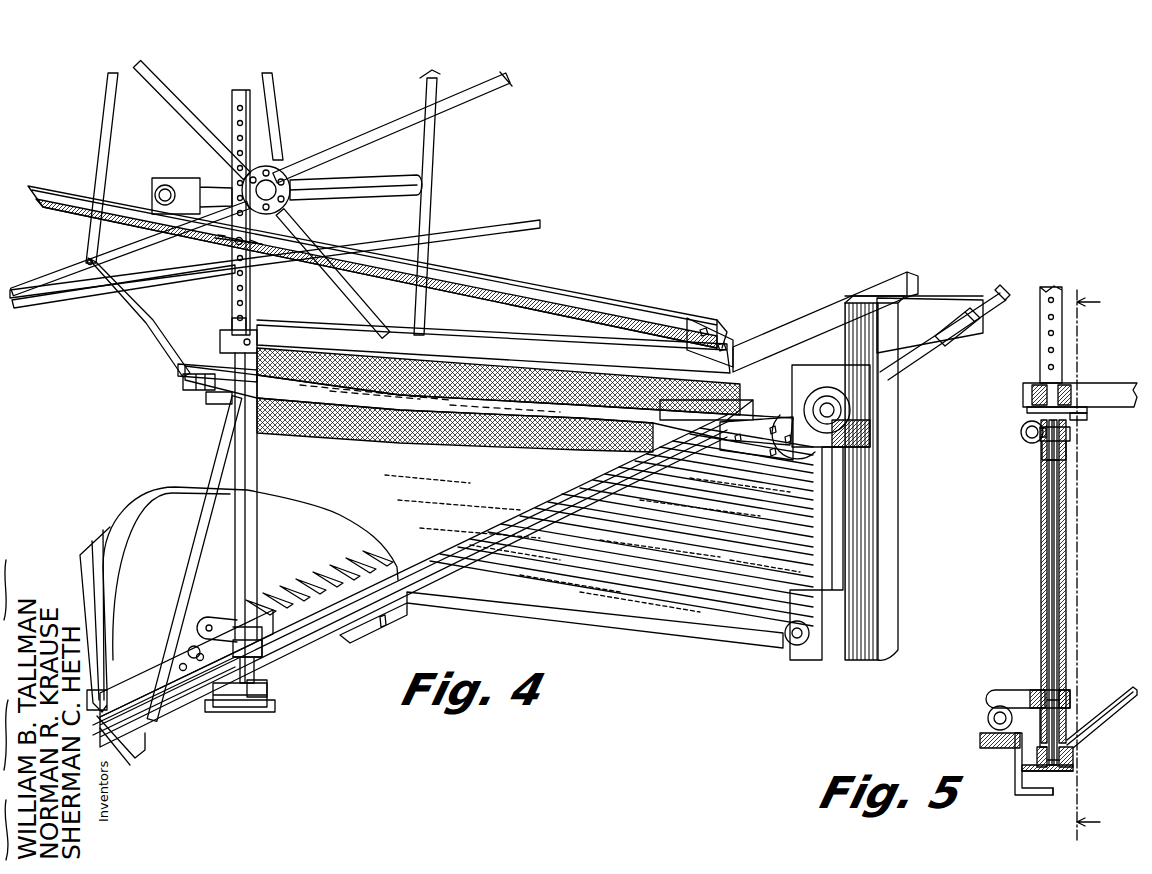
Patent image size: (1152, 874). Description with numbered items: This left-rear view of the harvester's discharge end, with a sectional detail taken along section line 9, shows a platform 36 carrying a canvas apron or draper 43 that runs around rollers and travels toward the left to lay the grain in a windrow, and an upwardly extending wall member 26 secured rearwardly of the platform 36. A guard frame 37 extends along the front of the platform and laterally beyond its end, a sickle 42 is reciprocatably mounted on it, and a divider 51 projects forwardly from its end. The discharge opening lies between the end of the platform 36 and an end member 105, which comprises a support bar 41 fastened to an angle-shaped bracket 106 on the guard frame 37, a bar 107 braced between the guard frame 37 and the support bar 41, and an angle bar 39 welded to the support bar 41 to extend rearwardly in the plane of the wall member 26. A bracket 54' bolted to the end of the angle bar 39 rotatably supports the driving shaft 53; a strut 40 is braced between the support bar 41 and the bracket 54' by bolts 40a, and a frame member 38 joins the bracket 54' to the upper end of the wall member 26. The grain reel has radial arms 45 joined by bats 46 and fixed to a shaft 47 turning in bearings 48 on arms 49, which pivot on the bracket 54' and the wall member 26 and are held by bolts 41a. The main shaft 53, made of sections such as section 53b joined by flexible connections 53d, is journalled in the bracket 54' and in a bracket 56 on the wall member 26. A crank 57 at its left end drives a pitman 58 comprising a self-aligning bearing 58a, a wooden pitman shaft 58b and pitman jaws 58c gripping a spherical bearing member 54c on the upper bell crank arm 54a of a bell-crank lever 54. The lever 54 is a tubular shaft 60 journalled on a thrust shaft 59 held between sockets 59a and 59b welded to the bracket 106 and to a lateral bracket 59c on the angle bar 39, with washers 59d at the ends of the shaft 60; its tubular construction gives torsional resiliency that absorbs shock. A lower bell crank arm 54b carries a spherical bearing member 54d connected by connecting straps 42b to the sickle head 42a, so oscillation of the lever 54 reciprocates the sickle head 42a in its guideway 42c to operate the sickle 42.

In FIG. 5, the section line 9 is at (1094, 567).
In FIG. 4, the wall member 26 is at (893, 520).
In FIG. 4, the platform 36 is at (749, 652).
In FIG. 4, the guard frame 37 is at (370, 617).
In FIG. 5, the guard frame 37 is at (1020, 797).
In FIG. 4, the frame member 38 is at (787, 320).
In FIG. 4, the angle bar 39 is at (480, 320).
In FIG. 5, the angle bar 39 is at (1120, 393).
In FIG. 4, the strut 40 is at (353, 607).
In FIG. 5, the strut 40 is at (1100, 713).
In FIG. 4, the bolts 40a is at (730, 417).
In FIG. 4, the support bar 41 is at (252, 290).
In FIG. 4, the bolts 41a is at (234, 243).
In FIG. 4, the sickle 42 is at (327, 584).
In FIG. 5, the sickle 42 is at (983, 730).
In FIG. 4, the sickle head 42a is at (152, 688).
In FIG. 4, the connecting straps 42b is at (190, 656).
In FIG. 4, the guideway 42c is at (120, 727).
In FIG. 4, the canvas apron or draper 43 is at (693, 577).
In FIG. 4, the reel arms 45 is at (178, 126).
In FIG. 4, the bats 46 is at (80, 300).
In FIG. 4, the reel shaft 47 is at (402, 184).
In FIG. 4, the bearings 48 is at (180, 178).
In FIG. 4, the reel support arms 49 is at (508, 262).
In FIG. 4, the divider 51 is at (97, 566).
In FIG. 4, the main shaft 53 is at (990, 293).
In FIG. 4, the shaft section 53b is at (923, 353).
In FIG. 4, the flexible connection 53d is at (957, 337).
In FIG. 4, the bell-crank lever 54 is at (213, 518).
In FIG. 5, the bell-crank lever 54 is at (1078, 592).
In FIG. 4, the bracket 54' is at (888, 433).
In FIG. 4, the bell crank arm 54a is at (213, 397).
In FIG. 5, the bell crank arm 54a is at (1063, 447).
In FIG. 4, the bell crank arm 54b is at (222, 624).
In FIG. 5, the bell crank arm 54b is at (1017, 693).
In FIG. 4, the spherical bearing member 54c is at (183, 381).
In FIG. 5, the spherical bearing member 54c is at (1033, 443).
In FIG. 4, the spherical bearing member 54d is at (203, 644).
In FIG. 5, the spherical bearing member 54d is at (987, 717).
In FIG. 4, the bracket 56 is at (933, 313).
In FIG. 4, the crank 57 is at (867, 420).
In FIG. 4, the pitman 58 is at (563, 420).
In FIG. 4, the self-aligning bearing 58a is at (855, 435).
In FIG. 4, the pitman shaft 58b is at (473, 413).
In FIG. 4, the pitman jaws 58c is at (203, 393).
In FIG. 4, the thrust shaft 59 is at (230, 314).
In FIG. 5, the thrust shaft 59 is at (1053, 577).
In FIG. 4, the socket 59a is at (224, 342).
In FIG. 5, the socket 59a is at (1073, 757).
In FIG. 5, the socket 59b is at (1067, 390).
In FIG. 4, the bracket 59c is at (182, 368).
In FIG. 5, the bracket 59c is at (1087, 413).
In FIG. 4, the washers 59d is at (273, 681).
In FIG. 5, the washers 59d is at (1037, 413).
In FIG. 5, the tubular shaft 60 is at (1063, 540).
In FIG. 4, the end member 105 is at (582, 344).
In FIG. 4, the angle-shaped bracket 106 is at (213, 700).
In FIG. 5, the angle-shaped bracket 106 is at (1067, 770).
In FIG. 4, the bar 107 is at (216, 465).